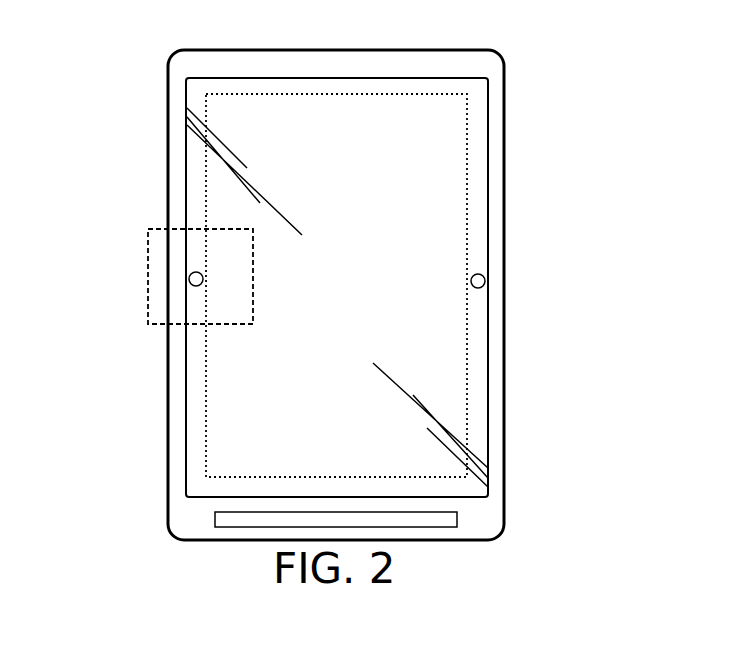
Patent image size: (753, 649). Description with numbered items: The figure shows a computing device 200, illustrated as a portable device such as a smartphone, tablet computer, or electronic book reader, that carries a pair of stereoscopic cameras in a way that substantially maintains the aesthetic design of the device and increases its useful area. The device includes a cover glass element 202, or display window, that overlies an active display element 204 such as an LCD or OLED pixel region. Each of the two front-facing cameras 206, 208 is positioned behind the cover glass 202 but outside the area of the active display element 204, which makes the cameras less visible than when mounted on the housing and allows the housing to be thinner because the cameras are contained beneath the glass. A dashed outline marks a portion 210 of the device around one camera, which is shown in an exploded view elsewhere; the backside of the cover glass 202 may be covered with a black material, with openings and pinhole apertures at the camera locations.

The computing device 200 is at (647, 105).
The cover glass element 202 is at (187, 135).
The active display element 204 is at (452, 183).
The front-facing camera 206 is at (189, 277).
The front-facing camera 208 is at (485, 279).
The portion of the computing device 210 is at (148, 247).